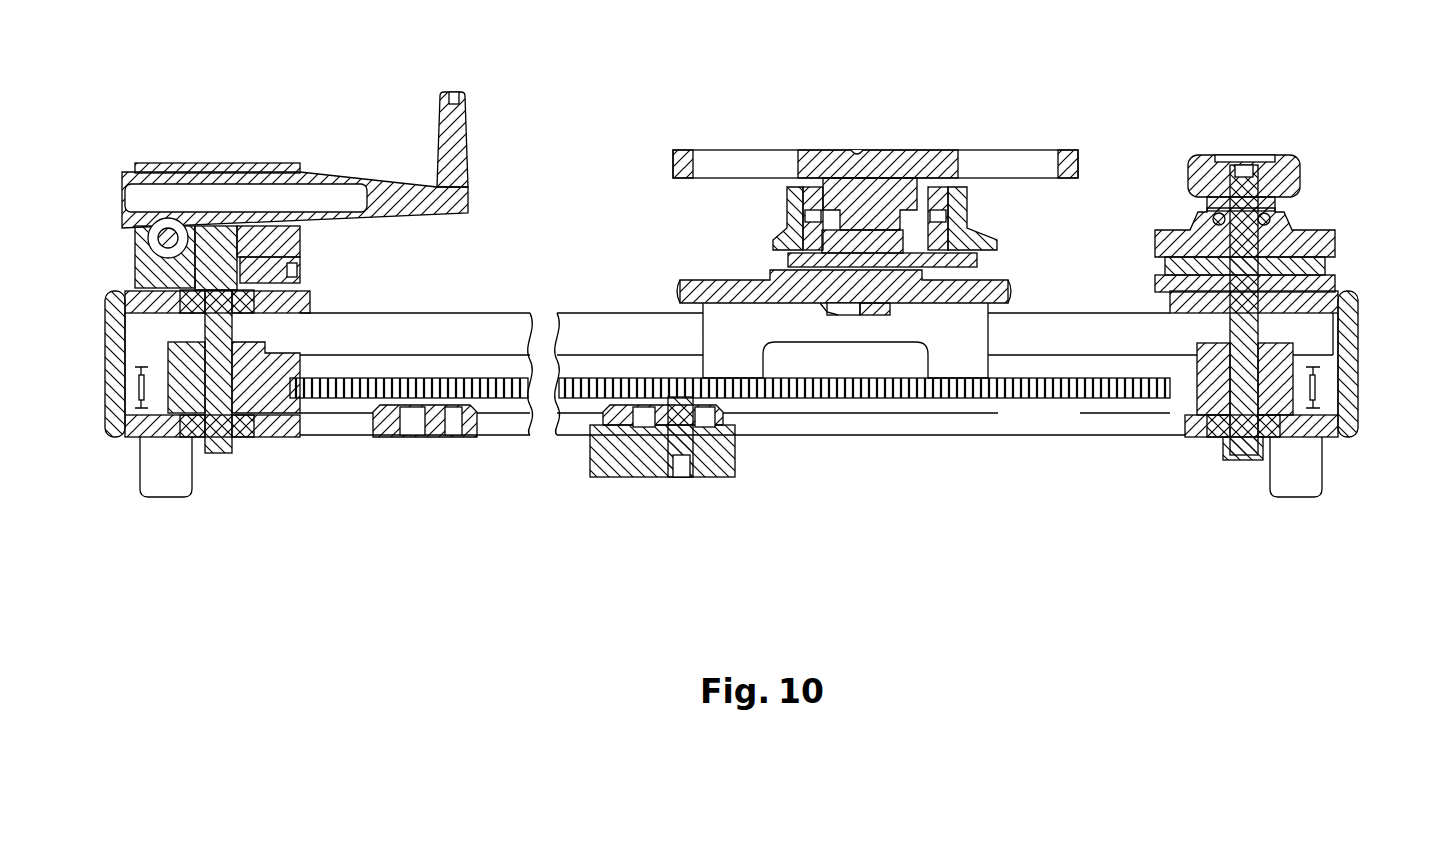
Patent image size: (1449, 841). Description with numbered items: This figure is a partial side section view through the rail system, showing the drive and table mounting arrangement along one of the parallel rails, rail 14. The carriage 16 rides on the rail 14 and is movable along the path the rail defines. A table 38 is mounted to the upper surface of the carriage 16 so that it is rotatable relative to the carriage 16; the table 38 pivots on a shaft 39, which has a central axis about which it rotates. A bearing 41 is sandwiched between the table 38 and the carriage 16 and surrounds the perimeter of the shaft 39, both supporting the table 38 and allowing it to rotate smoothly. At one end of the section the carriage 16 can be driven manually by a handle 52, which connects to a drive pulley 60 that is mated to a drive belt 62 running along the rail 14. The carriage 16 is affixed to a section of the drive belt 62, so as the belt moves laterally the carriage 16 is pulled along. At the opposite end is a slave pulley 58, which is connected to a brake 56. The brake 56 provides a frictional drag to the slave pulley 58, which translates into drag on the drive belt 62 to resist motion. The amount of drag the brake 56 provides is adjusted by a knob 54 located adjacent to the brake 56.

The rail 14 is at (465, 325).
The carriage 16 is at (682, 290).
The table 38 is at (935, 150).
The shaft 39 is at (795, 205).
The bearing 41 is at (812, 187).
The handle 52 is at (365, 170).
The knob 54 is at (1200, 155).
The brake 56 is at (1335, 243).
The slave pulley 58 is at (1315, 380).
The drive pulley 60 is at (283, 395).
The drive belt 62 is at (510, 390).